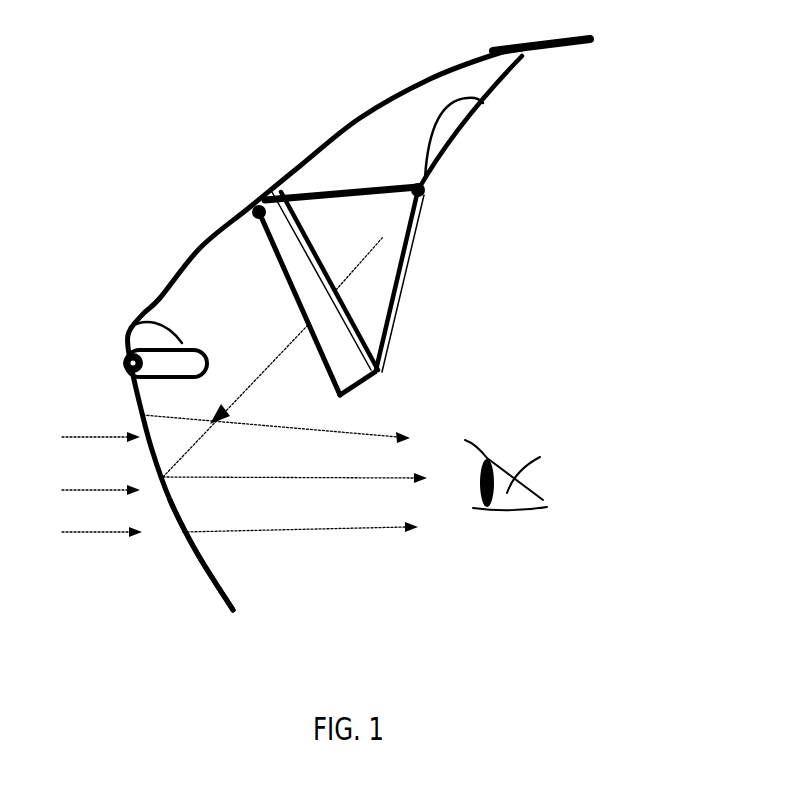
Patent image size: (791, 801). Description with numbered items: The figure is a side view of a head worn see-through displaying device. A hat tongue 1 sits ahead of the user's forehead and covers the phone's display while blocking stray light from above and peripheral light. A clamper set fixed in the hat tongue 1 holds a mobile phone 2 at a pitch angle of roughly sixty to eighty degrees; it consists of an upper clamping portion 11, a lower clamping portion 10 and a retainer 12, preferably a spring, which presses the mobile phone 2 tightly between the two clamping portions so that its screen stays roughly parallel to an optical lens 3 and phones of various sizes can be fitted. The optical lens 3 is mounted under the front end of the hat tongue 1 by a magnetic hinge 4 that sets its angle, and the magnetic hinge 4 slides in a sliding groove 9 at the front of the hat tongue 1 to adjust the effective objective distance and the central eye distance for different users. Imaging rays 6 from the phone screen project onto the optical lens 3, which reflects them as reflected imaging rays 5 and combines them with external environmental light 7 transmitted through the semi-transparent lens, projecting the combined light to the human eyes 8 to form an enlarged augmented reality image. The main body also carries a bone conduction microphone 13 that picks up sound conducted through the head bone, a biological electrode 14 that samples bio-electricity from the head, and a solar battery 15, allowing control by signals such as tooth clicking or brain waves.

The hat tongue 1 is at (233, 212).
The mobile phone 2 is at (300, 305).
The optical lens 3 is at (212, 590).
The magnetic hinge 4 is at (125, 361).
The reflected imaging rays 5 is at (353, 532).
The imaging rays 6 is at (258, 369).
The external environmental light 7 is at (80, 533).
The human eyes 8 is at (540, 457).
The sliding groove 9 is at (128, 327).
The lower clamping portion 10 is at (375, 375).
The upper clamping portion 11 is at (313, 186).
The retainer 12 is at (383, 237).
The bone conduction microphone 13 is at (468, 118).
The biological electrode 14 is at (395, 293).
The solar battery 15 is at (590, 45).